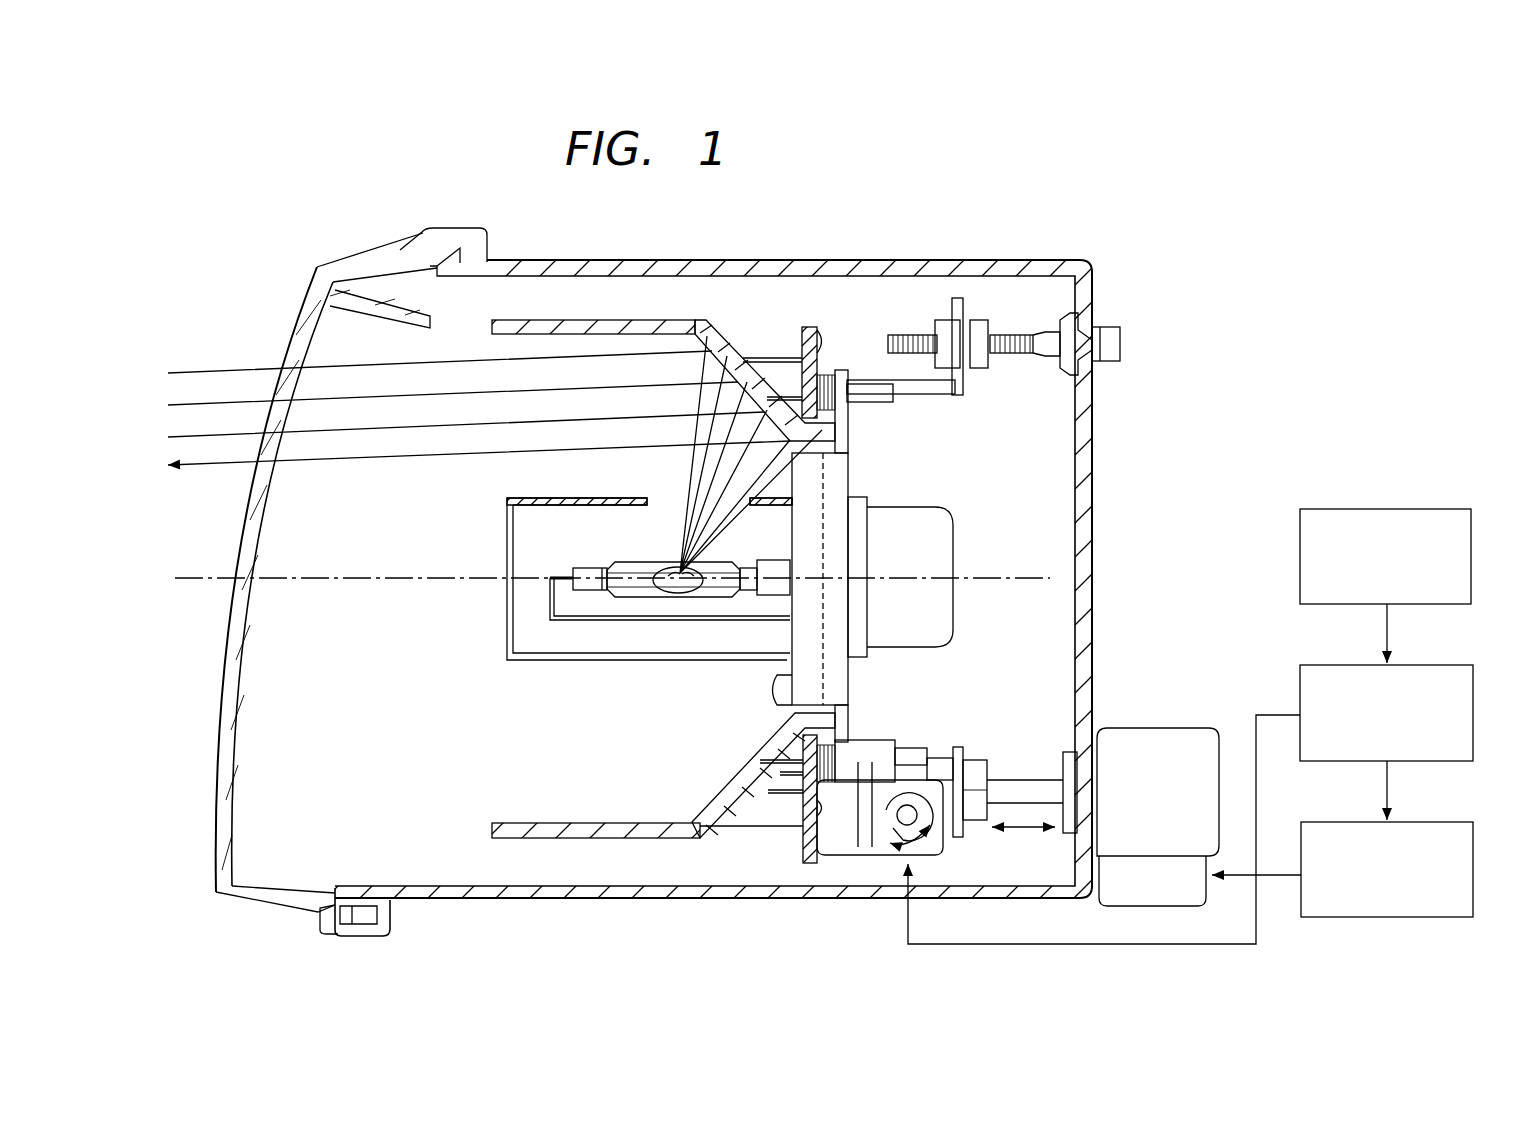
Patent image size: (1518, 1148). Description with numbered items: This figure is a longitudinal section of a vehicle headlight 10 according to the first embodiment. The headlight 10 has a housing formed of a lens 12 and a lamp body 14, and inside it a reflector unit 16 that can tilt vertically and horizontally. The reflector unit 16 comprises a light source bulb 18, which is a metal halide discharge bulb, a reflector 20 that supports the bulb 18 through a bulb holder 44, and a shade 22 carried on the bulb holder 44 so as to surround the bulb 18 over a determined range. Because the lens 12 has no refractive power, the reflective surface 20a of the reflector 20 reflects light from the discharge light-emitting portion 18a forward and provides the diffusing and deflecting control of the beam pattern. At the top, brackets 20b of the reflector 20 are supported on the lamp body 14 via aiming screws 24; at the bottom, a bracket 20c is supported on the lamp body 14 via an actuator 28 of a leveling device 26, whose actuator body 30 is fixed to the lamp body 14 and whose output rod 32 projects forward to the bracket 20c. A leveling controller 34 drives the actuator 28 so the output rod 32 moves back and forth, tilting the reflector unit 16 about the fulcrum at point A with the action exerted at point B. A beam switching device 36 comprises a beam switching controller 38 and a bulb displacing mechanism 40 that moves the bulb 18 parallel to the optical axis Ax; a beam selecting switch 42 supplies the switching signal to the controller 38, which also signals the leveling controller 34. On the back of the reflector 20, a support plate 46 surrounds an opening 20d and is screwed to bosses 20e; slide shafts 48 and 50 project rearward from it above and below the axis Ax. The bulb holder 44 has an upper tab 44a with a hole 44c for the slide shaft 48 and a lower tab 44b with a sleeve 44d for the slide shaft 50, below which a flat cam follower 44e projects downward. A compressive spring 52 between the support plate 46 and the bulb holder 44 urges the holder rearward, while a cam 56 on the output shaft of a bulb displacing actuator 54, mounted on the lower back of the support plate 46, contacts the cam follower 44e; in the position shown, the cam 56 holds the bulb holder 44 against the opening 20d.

The vehicle headlight 10 is at (300, 250).
The lens 12 is at (295, 330).
The lamp body 14 is at (900, 258).
The reflector unit 16 is at (592, 584).
The light source bulb 18 is at (676, 478).
The discharge light-emitting portion 18a is at (678, 568).
The reflector 20 is at (768, 541).
The reflective surface 20a is at (712, 385).
The bracket 20b is at (958, 305).
The bracket 20c is at (966, 830).
The opening 20d is at (770, 500).
The bosses 20e is at (722, 320).
The shade 22 is at (505, 540).
The aiming screws 24 is at (1000, 356).
The leveling device 26 is at (1270, 910).
The actuator 28 is at (1158, 766).
The actuator body 30 is at (1182, 730).
The output rod 32 is at (1035, 790).
The leveling controller 34 is at (1445, 821).
The beam switching device 36 is at (1190, 712).
The beam switching controller 38 is at (1440, 664).
The bulb displacing mechanism 40 is at (822, 862).
The beam selecting switch 42 is at (1432, 508).
The bulb holder 44 is at (886, 625).
The upper tab 44a is at (850, 432).
The lower tab 44b is at (848, 712).
The hole 44c is at (858, 380).
The sleeve 44d is at (880, 740).
The cam follower 44e is at (862, 845).
The support plate 46 is at (800, 778).
The slide shaft 48 is at (890, 402).
The slide shaft 50 is at (915, 750).
The compressive spring 52 is at (828, 378).
The bulb displacing actuator 54 is at (945, 848).
The cam 56 is at (882, 832).
The point A is at (958, 345).
The point B is at (958, 790).
The optical axis Ax is at (318, 588).